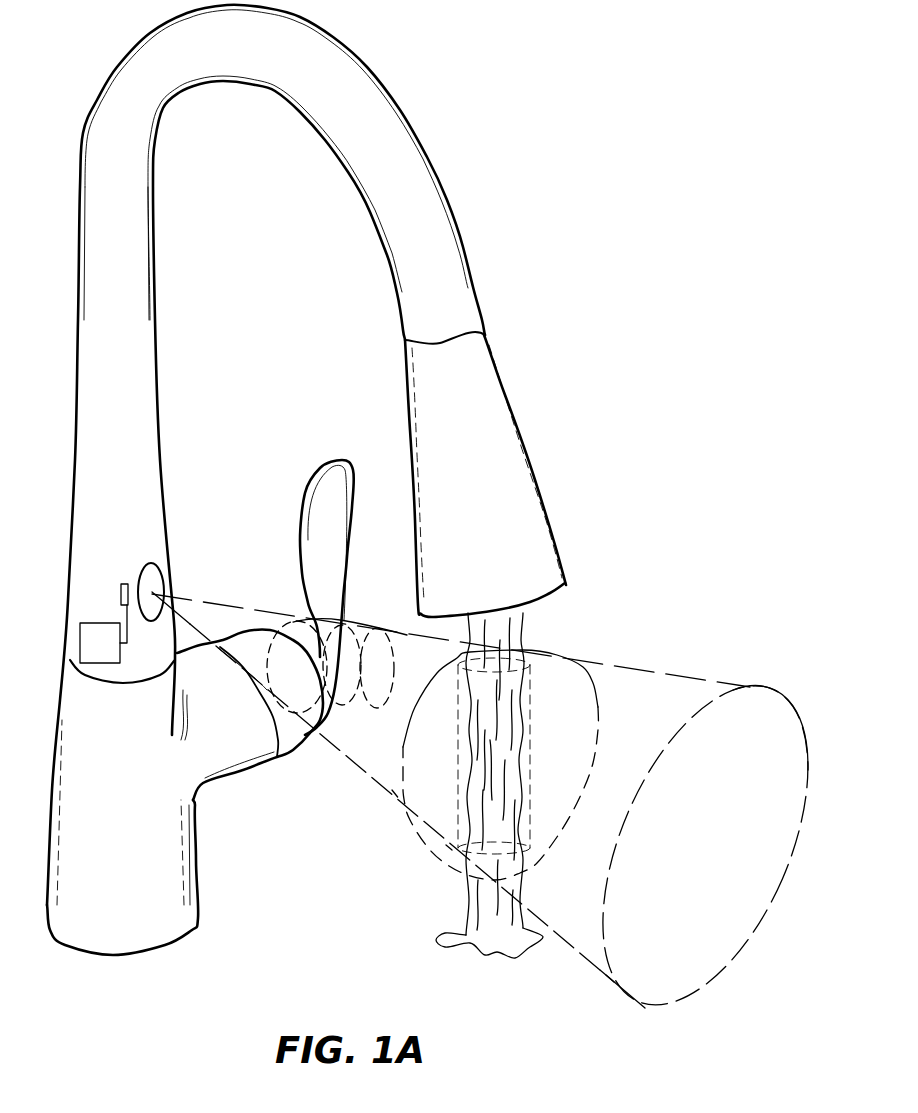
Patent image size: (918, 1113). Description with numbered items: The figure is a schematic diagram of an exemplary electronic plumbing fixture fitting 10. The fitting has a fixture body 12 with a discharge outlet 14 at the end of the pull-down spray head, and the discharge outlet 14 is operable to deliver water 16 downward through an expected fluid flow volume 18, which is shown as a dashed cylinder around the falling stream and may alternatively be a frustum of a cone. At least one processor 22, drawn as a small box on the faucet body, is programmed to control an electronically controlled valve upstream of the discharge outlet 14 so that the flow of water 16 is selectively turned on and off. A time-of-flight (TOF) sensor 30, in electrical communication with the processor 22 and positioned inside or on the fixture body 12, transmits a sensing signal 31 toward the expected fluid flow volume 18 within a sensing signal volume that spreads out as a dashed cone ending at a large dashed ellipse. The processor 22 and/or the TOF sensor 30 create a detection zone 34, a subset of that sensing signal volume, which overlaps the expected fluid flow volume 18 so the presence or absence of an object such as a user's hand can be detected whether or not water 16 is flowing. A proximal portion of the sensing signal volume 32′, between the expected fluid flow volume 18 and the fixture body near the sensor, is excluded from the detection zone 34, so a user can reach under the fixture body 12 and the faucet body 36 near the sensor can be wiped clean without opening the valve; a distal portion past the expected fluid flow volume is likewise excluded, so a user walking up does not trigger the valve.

The electronic plumbing fixture fitting 10 is at (580, 84).
The fixture body 12 is at (350, 97).
The discharge outlet 14 is at (437, 630).
The water 16 is at (513, 883).
The expected fluid flow volume 18 is at (590, 666).
The processor 22 is at (93, 623).
The time-of-flight (TOF) sensor 30 is at (122, 585).
The sensing signal 31 is at (310, 627).
The proximal portion of the sensing signal volume 32′ is at (392, 790).
The detection zone 34 is at (598, 713).
The faucet body 36 is at (153, 580).